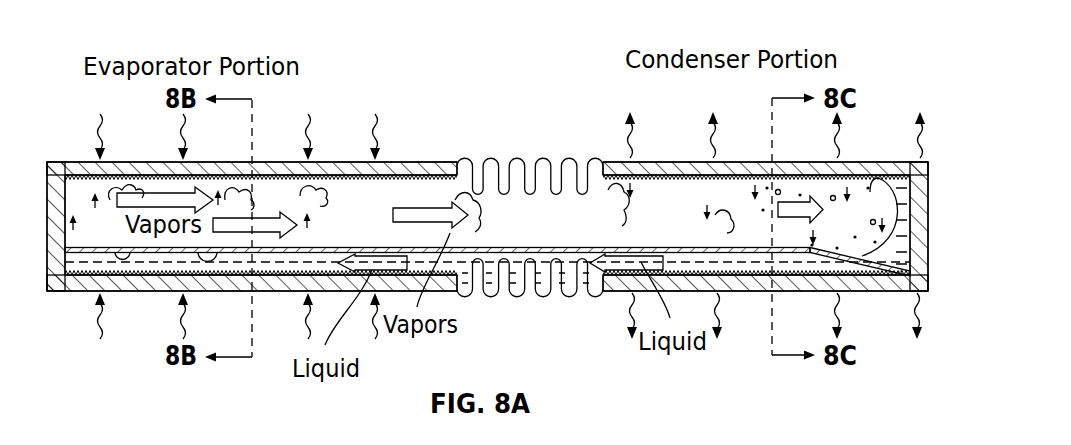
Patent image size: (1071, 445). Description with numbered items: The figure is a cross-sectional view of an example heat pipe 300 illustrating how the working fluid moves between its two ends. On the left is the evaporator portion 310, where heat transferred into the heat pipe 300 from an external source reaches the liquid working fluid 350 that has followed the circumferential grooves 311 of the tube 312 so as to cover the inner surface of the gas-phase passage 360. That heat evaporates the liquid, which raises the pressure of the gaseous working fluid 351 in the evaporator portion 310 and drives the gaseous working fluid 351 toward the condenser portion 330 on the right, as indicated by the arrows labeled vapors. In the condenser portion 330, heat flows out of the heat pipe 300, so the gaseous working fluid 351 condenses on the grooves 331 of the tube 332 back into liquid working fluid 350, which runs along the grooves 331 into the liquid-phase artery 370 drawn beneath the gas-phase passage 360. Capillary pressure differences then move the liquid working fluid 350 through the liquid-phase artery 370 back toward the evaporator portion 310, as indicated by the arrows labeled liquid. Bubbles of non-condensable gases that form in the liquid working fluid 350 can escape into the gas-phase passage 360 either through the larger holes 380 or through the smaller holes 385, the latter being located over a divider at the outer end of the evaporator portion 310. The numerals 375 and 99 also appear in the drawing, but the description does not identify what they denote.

The heat pipe 300 is at (419, 38).
The evaporator portion 310 is at (300, 66).
The circumferential grooves 311 is at (261, 194).
The tube 312 is at (388, 196).
The condenser portion 330 is at (838, 60).
The grooves 331 is at (697, 180).
The tube 332 is at (668, 176).
The liquid working fluid 350 is at (95, 262).
The gaseous working fluid 351 is at (530, 222).
The gas-phase passage 360 is at (263, 200).
The liquid-phase artery 370 is at (855, 266).
The liquid return flow 375 is at (203, 258).
The larger holes 380 is at (160, 253).
The smaller holes 385 is at (102, 248).
The separator plate 99 is at (378, 247).